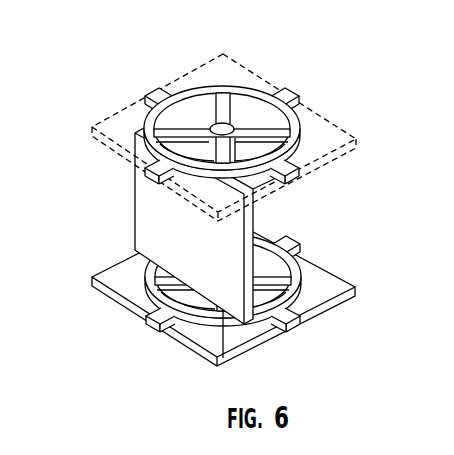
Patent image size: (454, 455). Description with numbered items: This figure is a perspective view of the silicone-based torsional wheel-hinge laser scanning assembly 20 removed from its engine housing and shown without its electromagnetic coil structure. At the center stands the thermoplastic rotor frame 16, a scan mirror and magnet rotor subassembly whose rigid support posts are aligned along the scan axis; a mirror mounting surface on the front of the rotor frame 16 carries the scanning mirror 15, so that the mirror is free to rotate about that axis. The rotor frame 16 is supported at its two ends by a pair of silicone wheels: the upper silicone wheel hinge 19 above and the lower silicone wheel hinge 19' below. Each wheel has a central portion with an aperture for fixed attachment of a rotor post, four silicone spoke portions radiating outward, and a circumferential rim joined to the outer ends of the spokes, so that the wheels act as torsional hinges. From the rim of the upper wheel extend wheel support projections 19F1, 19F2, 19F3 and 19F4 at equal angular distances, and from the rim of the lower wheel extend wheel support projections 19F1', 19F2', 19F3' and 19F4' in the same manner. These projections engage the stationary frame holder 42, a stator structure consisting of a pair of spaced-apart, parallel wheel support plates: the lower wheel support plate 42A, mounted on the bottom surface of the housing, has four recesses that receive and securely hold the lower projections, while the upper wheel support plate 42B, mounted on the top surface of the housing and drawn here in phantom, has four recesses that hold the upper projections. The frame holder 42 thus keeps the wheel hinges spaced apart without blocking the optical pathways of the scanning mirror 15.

The scanning mirror 15 is at (204, 272).
The rotor frame 16 is at (250, 204).
The upper silicone wheel hinge 19 is at (250, 132).
The lower silicone wheel hinge 19' is at (265, 275).
The wheel support projection 19F1 is at (338, 151).
The wheel support projection 19F2 is at (179, 73).
The wheel support projection 19F3 is at (118, 192).
The wheel support projection 19F4 is at (310, 86).
The wheel support projection 19F1' is at (325, 332).
The wheel support projection 19F2' is at (97, 245).
The wheel support projection 19F3' is at (127, 344).
The wheel support projection 19F4' is at (336, 225).
The laser scanning assembly 20 is at (110, 298).
The stationary frame holder 42 is at (223, 285).
The lower wheel support plate 42A is at (97, 277).
The upper wheel support plate 42B is at (115, 125).